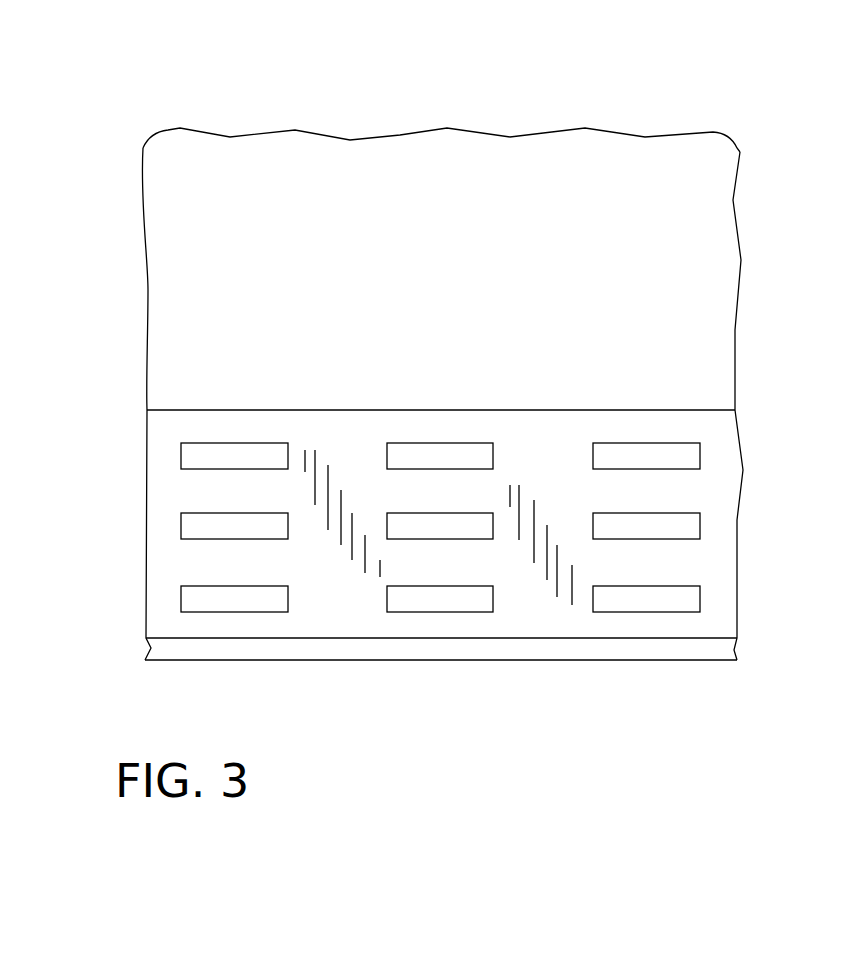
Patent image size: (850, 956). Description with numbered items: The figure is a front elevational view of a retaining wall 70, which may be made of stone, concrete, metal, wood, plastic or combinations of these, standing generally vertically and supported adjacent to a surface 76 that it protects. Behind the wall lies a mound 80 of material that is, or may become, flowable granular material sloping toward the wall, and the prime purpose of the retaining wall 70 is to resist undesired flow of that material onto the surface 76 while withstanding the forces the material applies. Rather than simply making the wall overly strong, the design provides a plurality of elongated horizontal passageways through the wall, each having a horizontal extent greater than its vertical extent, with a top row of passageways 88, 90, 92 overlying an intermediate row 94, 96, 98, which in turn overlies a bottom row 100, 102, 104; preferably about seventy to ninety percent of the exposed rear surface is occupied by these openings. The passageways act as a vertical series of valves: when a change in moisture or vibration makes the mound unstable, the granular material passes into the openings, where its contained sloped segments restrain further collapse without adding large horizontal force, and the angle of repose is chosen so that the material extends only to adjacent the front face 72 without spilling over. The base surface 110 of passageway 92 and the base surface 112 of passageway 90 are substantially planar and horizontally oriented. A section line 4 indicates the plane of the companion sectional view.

The section line 4- 4 is at (438, 122).
The retaining wall 70 is at (756, 432).
The front face 72 is at (563, 468).
The surface 76 is at (708, 655).
The mound 80 is at (447, 260).
The elongated horizontal passageway 88 is at (607, 456).
The elongated horizontal passageway 90 is at (428, 455).
The elongated horizontal passageway 92 is at (257, 458).
The elongated horizontal passageway 94 is at (663, 518).
The elongated horizontal passageway 96 is at (395, 528).
The elongated horizontal passageway 98 is at (263, 530).
The elongated horizontal passageway 100 is at (665, 602).
The elongated horizontal passageway 102 is at (457, 605).
The elongated horizontal passageway 104 is at (217, 602).
The base surface 110 is at (222, 466).
The base surface 112 is at (473, 460).